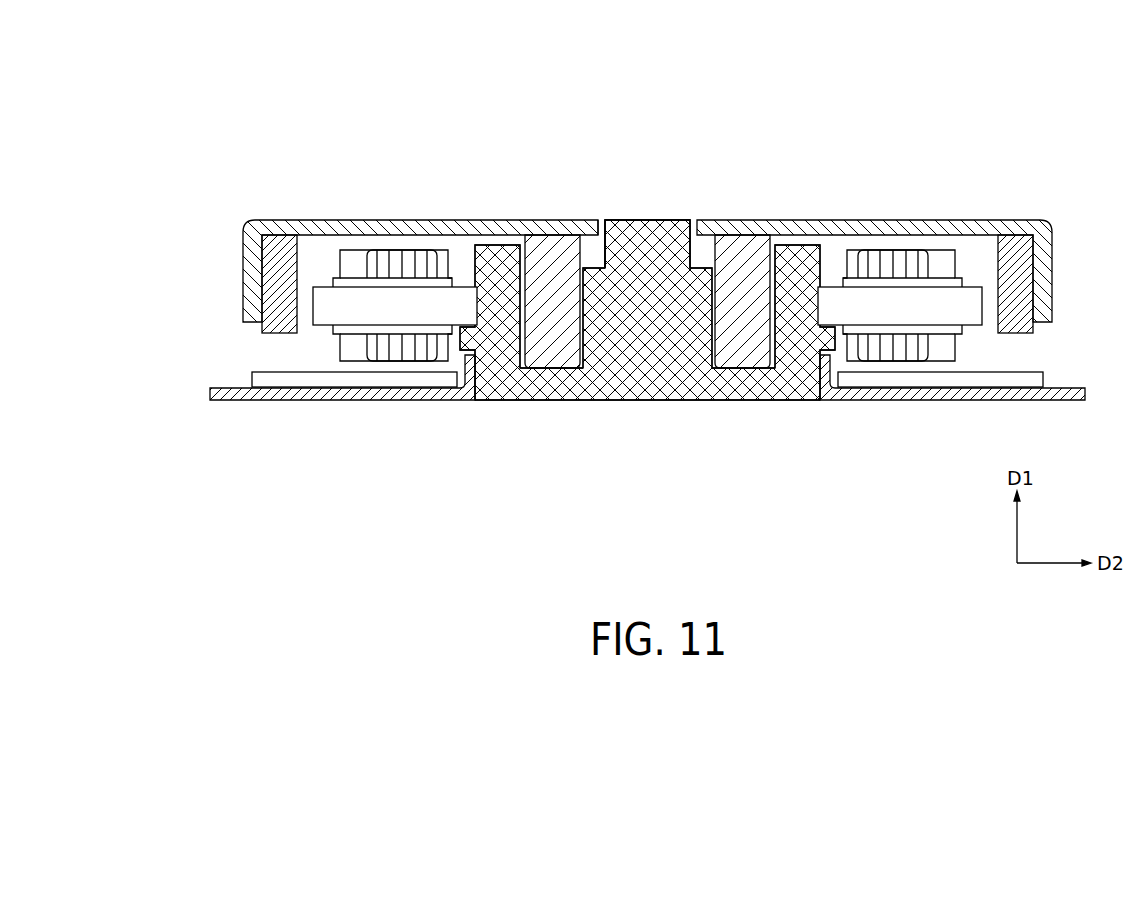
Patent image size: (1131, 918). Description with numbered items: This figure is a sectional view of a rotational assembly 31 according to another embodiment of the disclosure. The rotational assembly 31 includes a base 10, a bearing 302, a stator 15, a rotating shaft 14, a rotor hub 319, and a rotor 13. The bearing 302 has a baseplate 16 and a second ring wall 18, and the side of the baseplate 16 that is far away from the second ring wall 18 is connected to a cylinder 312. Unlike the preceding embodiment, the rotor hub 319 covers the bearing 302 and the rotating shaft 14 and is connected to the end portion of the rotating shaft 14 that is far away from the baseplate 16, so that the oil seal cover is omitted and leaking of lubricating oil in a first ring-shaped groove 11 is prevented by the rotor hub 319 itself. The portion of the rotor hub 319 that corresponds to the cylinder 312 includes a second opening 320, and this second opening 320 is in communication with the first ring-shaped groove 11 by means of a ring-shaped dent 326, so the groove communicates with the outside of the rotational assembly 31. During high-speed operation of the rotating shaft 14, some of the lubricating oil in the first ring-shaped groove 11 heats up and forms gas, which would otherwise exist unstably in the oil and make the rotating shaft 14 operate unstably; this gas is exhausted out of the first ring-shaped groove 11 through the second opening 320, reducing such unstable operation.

The rotational assembly 31 is at (206, 58).
The base 10 is at (396, 401).
The first ring-shaped groove 11 is at (523, 246).
The rotor 13 is at (279, 272).
The rotating shaft 14 is at (552, 282).
The stator 15 is at (393, 264).
The baseplate 16 is at (552, 378).
The second ring wall 18 is at (494, 350).
The bearing 302 is at (647, 365).
The cylinder 312 is at (647, 346).
The rotor hub 319 is at (421, 234).
The second opening 320 is at (650, 205).
The ring-shaped dent 326 is at (602, 222).